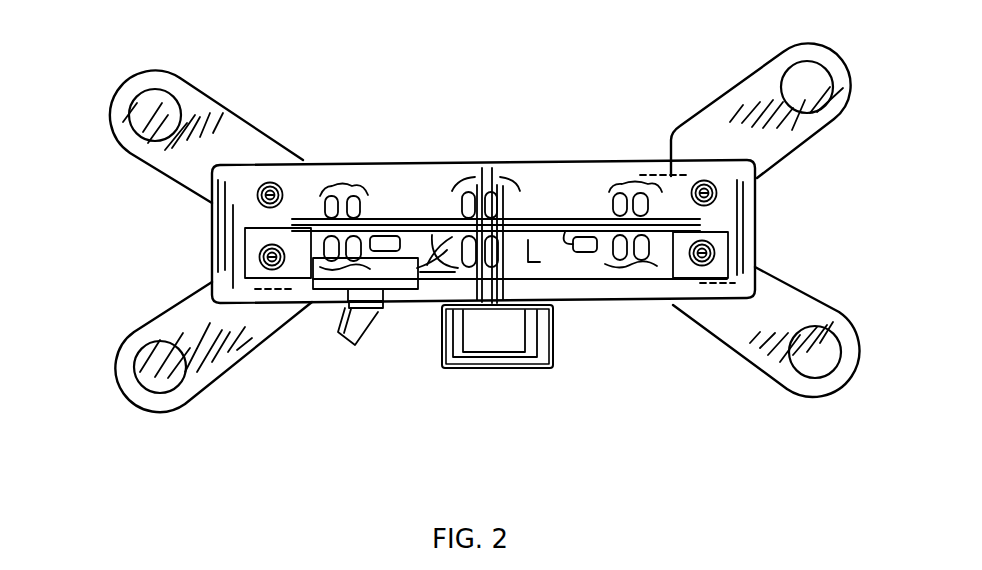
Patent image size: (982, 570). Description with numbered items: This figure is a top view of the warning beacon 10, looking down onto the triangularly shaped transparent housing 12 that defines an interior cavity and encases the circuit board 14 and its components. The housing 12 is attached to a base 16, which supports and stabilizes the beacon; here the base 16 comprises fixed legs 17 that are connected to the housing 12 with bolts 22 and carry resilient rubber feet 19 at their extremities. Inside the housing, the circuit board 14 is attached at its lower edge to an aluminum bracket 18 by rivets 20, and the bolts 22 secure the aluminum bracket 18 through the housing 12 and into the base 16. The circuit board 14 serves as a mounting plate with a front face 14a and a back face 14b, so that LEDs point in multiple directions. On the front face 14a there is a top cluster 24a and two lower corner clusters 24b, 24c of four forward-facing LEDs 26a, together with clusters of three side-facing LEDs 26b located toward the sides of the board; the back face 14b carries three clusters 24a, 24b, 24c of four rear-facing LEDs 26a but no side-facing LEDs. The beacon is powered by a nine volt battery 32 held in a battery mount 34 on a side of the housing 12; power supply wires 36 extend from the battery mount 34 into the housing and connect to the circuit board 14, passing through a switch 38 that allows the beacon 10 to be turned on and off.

The warning beacon 10 is at (420, 108).
The housing 12 is at (557, 163).
The circuit board 14 is at (418, 212).
The front face 14a is at (562, 247).
The back face 14b is at (547, 220).
The base 16 is at (830, 288).
The fixed legs 17 is at (180, 80).
The aluminum bracket 18 is at (564, 233).
The rubber feet 19 is at (143, 118).
The rivets 20 is at (304, 207).
The bolts 22 is at (260, 255).
The top cluster 24a is at (490, 163).
The lower corner cluster 24b is at (338, 188).
The lower corner cluster 24c is at (645, 160).
The forward/rear facing LEDs 26a is at (362, 208).
The side-facing LEDs 26b is at (402, 302).
The 9 volt battery 32 is at (474, 360).
The battery mount 34 is at (565, 362).
The power supply wires 36 is at (432, 305).
The switch 38 is at (365, 328).